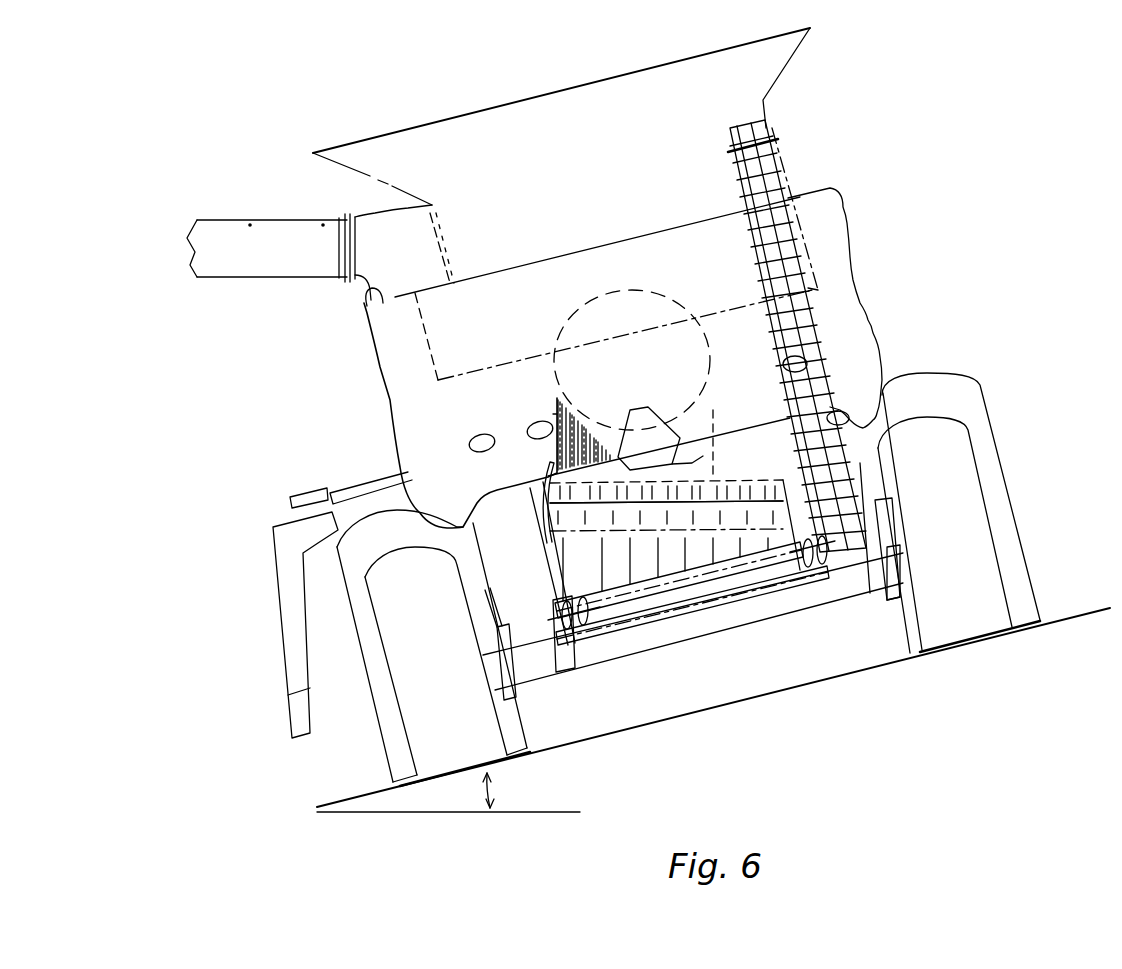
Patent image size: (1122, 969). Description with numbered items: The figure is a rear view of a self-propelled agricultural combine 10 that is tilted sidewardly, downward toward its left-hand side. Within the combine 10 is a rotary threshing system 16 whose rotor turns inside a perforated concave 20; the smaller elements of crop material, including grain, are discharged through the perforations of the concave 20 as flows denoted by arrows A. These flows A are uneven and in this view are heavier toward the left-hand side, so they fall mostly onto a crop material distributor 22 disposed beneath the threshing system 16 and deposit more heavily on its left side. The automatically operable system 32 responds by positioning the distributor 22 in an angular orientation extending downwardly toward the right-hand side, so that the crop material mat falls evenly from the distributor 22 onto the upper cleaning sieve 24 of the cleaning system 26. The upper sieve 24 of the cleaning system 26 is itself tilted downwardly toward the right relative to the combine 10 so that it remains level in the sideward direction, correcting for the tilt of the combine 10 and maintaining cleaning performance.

The self-propelled agricultural combine 10 is at (902, 78).
The rotary threshing system 16 is at (622, 290).
The perforated concave 20 is at (557, 398).
The crop material distributor 22 is at (760, 463).
The system 32 is at (666, 502).
The upper cleaning sieve 24 is at (537, 488).
The cleaning system 26 is at (788, 500).
The crop material flow arrows A is at (553, 414).